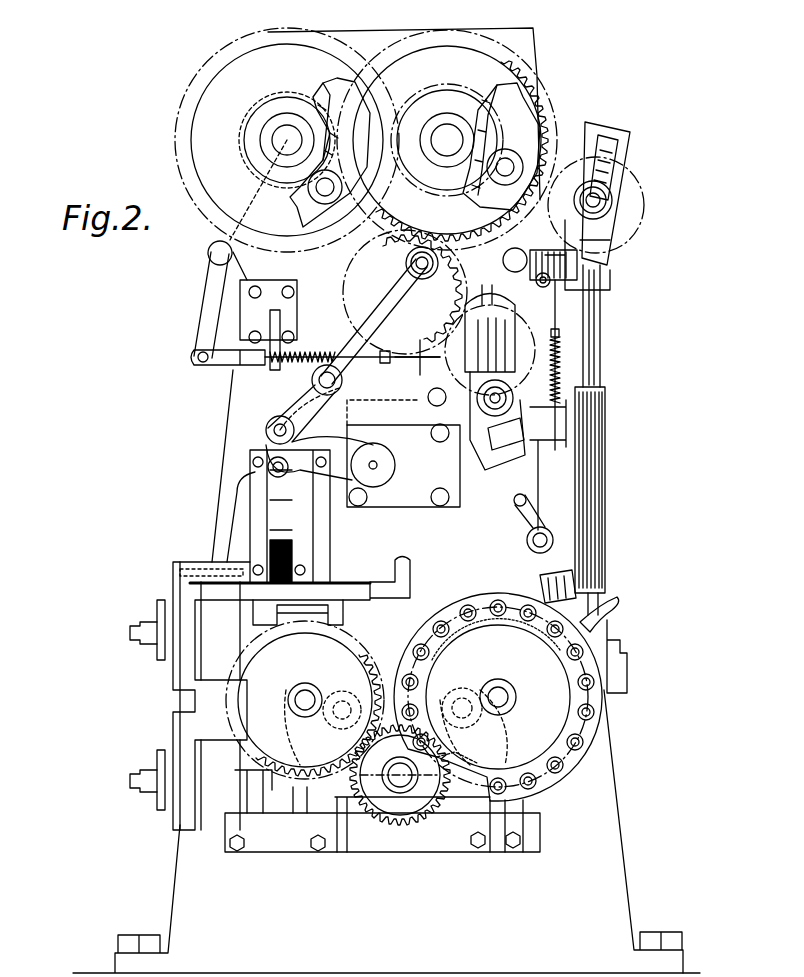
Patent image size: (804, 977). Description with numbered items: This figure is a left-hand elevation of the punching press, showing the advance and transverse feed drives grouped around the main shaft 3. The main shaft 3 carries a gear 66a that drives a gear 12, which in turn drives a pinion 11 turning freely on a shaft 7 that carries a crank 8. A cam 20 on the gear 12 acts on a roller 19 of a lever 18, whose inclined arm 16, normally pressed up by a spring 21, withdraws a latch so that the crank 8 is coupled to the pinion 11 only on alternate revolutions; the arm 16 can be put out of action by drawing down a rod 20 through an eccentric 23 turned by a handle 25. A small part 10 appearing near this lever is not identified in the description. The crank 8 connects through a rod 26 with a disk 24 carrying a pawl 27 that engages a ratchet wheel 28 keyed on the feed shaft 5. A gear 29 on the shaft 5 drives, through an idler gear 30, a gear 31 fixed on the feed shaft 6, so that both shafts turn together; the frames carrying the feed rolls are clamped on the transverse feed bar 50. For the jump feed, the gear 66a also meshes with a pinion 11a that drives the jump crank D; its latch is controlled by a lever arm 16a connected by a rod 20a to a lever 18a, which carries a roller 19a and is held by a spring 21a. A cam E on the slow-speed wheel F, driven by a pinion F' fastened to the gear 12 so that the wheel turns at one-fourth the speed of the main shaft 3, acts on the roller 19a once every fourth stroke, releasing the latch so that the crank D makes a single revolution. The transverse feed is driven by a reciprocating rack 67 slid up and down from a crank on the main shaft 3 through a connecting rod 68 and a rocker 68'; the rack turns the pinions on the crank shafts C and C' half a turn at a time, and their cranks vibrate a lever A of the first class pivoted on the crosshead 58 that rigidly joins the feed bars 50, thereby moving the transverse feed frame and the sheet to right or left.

The slow-speed wheel F is at (287, 140).
The pinion F' is at (447, 140).
The cam E is at (330, 152).
The roller 19a is at (336, 180).
The cam 20 is at (493, 128).
The roller 19 is at (506, 161).
The crank 8 is at (596, 206).
The shaft 7 is at (613, 203).
The pinion 11 is at (648, 222).
The gear 12 is at (436, 250).
The lever 18 is at (504, 260).
The gear 66a is at (490, 342).
The pin 10 is at (540, 287).
The inclined arm 16 is at (556, 405).
The lever 18a is at (196, 295).
The connecting rod 68 is at (369, 327).
The main shaft 3 is at (405, 292).
The spring 21a is at (352, 340).
The rocker 68' is at (312, 431).
The rod 20a is at (397, 362).
The pinion 11a is at (445, 375).
The lever arm 16a is at (455, 400).
The rod 26 is at (598, 355).
The spring 21 is at (560, 372).
The jump crank D is at (403, 447).
The reciprocating rack 67 is at (270, 522).
The lever A is at (398, 566).
The handle 25 is at (514, 512).
The eccentric 23 is at (553, 537).
The pawl 27 is at (488, 600).
The crank shaft C is at (136, 630).
The crank shaft C' is at (134, 780).
The feed shaft 6 is at (298, 692).
The transverse feed bar 50 is at (396, 715).
The ratchet wheel 28 is at (490, 628).
The feed shaft 5 is at (507, 694).
The gear 31 is at (340, 760).
The gear 29 is at (470, 760).
The disk 24 is at (590, 745).
The idler gear 30 is at (400, 783).
The crosshead 58 is at (455, 795).